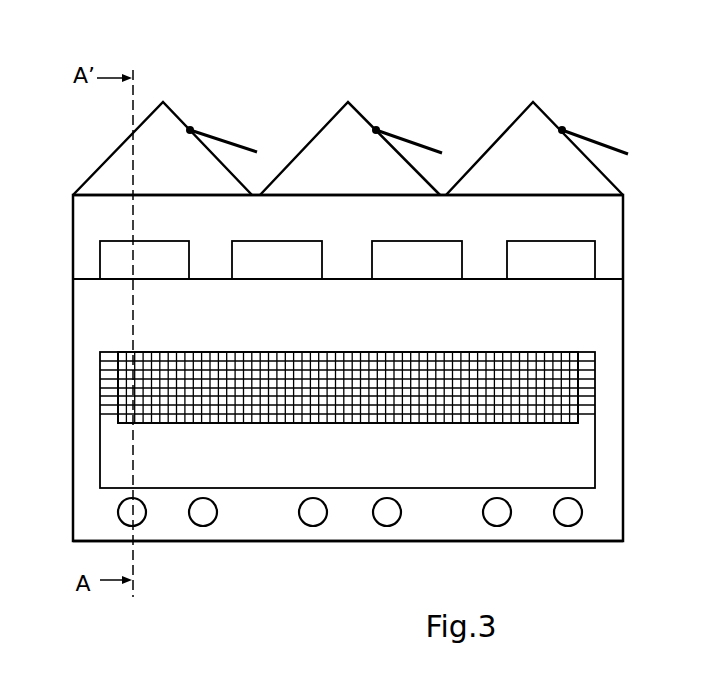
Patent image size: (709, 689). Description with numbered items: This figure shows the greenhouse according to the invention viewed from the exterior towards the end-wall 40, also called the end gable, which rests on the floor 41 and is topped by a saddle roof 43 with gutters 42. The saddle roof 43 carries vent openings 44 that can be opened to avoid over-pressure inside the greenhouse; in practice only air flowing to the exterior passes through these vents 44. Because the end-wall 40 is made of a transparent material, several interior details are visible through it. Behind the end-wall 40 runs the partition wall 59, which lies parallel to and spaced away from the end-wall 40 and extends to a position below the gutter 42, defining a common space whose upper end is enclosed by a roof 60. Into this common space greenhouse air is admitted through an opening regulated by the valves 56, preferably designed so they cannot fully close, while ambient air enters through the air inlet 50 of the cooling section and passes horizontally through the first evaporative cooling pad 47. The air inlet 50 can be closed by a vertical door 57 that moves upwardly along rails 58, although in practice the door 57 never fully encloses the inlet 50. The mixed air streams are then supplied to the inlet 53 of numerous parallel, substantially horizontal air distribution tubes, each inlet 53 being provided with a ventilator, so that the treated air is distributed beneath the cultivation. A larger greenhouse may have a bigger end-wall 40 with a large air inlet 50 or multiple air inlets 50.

The end-wall 40 is at (600, 298).
The floor 41 is at (267, 541).
The gutters 42 is at (72, 195).
The saddle roof 43 is at (168, 107).
The vent openings 44 is at (224, 141).
The first evaporative cooling pad 47 is at (137, 370).
The air inlet 50 is at (137, 403).
The inlet 53 is at (198, 512).
The valve 56 is at (113, 250).
The vertical door 57 is at (118, 458).
The rails 58 is at (108, 397).
The partition wall 59 is at (85, 312).
The roof 60 is at (91, 277).